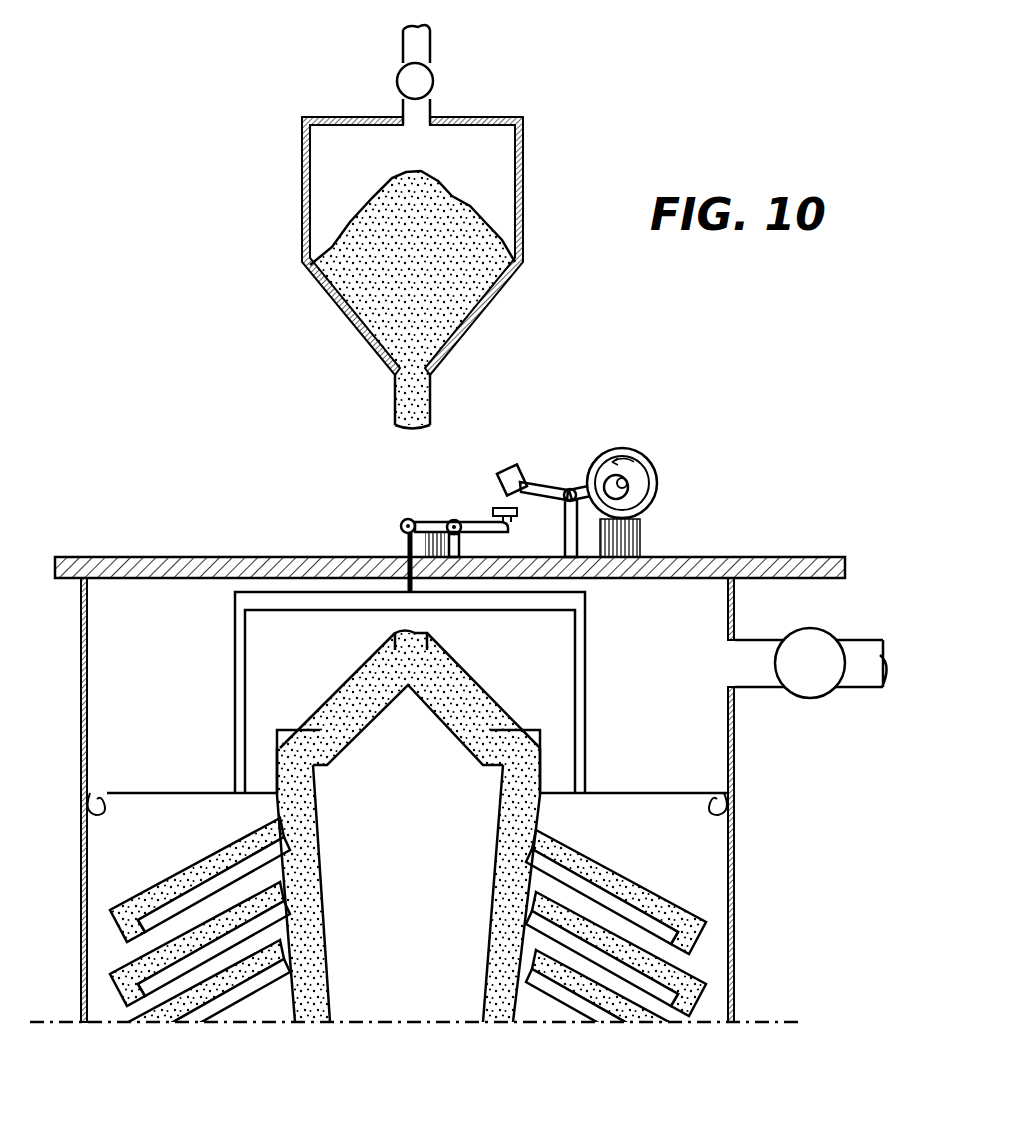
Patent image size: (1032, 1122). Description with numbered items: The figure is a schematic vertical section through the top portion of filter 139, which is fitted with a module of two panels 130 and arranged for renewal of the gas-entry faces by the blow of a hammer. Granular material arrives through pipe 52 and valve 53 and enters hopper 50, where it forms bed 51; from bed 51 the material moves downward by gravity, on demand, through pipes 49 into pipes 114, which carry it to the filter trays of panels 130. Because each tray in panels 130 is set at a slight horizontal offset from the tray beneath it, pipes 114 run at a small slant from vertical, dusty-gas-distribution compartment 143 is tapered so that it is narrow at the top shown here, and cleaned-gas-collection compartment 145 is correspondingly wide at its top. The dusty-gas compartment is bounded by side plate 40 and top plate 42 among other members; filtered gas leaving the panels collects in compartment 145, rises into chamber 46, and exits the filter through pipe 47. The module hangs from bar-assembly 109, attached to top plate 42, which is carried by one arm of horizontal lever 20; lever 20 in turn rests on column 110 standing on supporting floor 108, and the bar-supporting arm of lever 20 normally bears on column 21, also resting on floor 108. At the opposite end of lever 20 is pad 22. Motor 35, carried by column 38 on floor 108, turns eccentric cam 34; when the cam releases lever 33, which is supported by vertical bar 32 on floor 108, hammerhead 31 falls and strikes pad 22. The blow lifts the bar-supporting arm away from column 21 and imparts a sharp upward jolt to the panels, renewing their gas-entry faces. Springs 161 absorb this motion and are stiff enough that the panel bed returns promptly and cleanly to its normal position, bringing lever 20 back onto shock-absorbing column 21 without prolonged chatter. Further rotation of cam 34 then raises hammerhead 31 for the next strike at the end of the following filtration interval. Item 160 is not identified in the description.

The horizontal lever 20 is at (436, 521).
The column 21 is at (406, 519).
The pad 22 is at (498, 508).
The hammerhead 31 is at (515, 468).
The vertical bar 32 is at (566, 519).
The lever 33 is at (558, 484).
The eccentric cam 34 is at (604, 478).
The motor 35 is at (644, 462).
The column 38 is at (642, 528).
The side plate 40 is at (80, 718).
The top plate 42 is at (172, 790).
The chamber 46 is at (670, 680).
The pipe 47 is at (860, 640).
The pipe 49 is at (392, 405).
The hopper 50 is at (302, 185).
The bed 51 is at (412, 298).
The pipe 52 is at (433, 40).
The valve 53 is at (433, 82).
The supporting floor 108 is at (300, 556).
The bar-assembly 109 is at (406, 546).
The column 110 is at (468, 547).
The pipe 114 is at (323, 862).
The panel 130 is at (97, 928).
The filter 139 is at (738, 425).
The dusty-gas-distribution compartment 143 is at (100, 995).
The cleaned-gas-collection compartment 145 is at (400, 945).
The vacuum valve 160 is at (822, 697).
The spring 161 is at (108, 812).